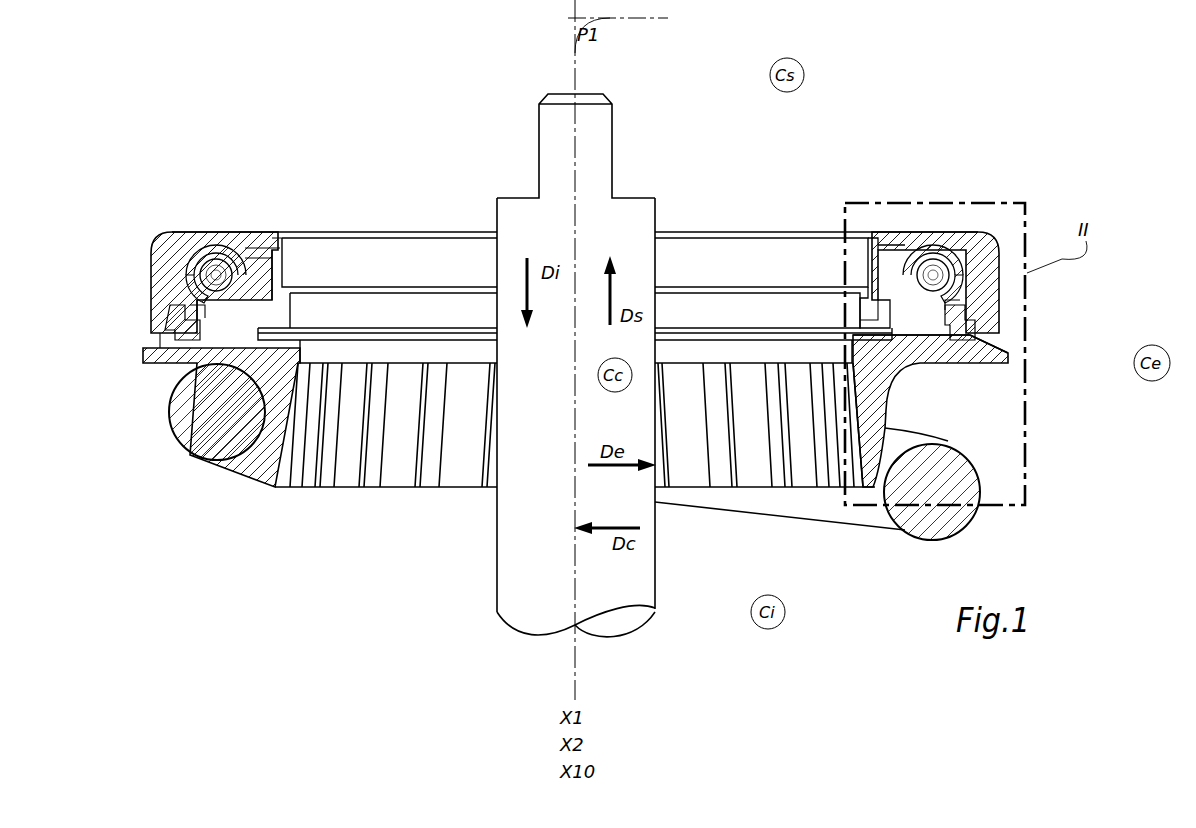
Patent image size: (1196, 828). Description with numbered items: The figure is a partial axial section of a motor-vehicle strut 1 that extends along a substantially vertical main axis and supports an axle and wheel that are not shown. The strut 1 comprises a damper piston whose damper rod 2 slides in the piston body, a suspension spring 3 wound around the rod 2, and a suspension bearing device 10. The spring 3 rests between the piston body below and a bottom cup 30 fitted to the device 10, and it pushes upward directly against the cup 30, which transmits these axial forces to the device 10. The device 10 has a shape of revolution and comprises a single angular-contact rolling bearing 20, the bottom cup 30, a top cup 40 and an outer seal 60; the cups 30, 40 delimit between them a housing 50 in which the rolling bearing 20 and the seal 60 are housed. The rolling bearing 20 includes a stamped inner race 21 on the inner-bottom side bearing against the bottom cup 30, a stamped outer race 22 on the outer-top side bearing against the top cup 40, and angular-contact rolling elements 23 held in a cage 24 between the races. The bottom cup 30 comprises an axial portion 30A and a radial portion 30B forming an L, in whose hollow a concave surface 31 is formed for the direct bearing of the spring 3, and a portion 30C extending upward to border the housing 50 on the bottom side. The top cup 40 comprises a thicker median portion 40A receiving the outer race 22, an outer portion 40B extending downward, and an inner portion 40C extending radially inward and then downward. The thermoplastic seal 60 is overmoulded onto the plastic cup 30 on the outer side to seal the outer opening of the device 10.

The strut 1 is at (409, 350).
The damper rod 2 is at (520, 548).
The suspension spring 3 is at (193, 412).
The suspension bearing device 10 is at (943, 299).
The angular-contact rolling bearing 20 is at (190, 249).
The inner race 21 is at (248, 248).
The outer race 22 is at (163, 237).
The rolling elements 23 is at (215, 265).
The cage 24 is at (153, 270).
The bottom cup 30 is at (625, 409).
The axial portion 30A is at (870, 425).
The radial portion 30B is at (965, 366).
The inner portion of bottom cup 30C is at (875, 277).
The concave surface 31 is at (992, 360).
The top cup 40 is at (943, 266).
The median portion 40A is at (998, 240).
The outer portion 40B is at (998, 322).
The inner portion 40C is at (878, 240).
The housing 50 is at (888, 236).
The outer seal 60 is at (1000, 343).